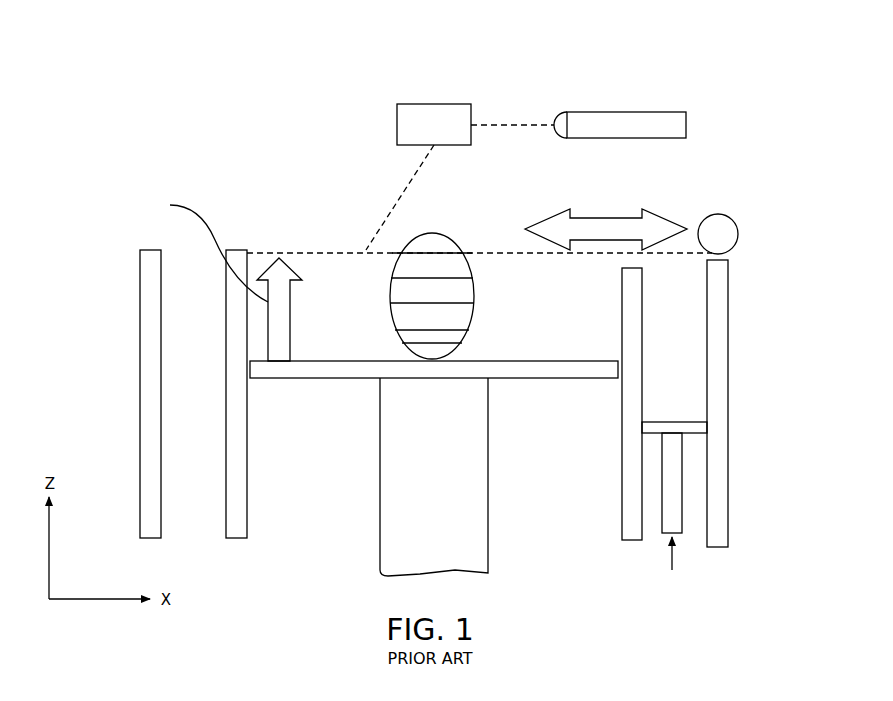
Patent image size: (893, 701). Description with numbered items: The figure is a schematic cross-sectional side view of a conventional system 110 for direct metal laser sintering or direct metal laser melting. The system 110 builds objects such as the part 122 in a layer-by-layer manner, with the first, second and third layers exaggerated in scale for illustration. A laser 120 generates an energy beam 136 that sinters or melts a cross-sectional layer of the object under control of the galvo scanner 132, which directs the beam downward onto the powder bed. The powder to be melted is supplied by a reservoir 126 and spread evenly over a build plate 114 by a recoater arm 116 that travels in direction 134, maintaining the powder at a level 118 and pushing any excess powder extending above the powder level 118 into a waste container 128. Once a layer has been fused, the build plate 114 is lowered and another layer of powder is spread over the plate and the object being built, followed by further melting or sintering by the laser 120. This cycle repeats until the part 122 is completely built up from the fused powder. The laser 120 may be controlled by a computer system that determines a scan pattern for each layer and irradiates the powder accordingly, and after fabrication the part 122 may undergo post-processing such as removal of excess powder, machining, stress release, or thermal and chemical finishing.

The system 110 is at (265, 98).
The build plate 114 is at (571, 360).
The recoater arm 116 is at (718, 214).
The powder level 118 is at (290, 250).
The laser 120 is at (612, 112).
The part 122 is at (389, 300).
The reservoir 126 is at (692, 316).
The waste container 128 is at (207, 477).
The galvo scanner 132 is at (438, 101).
The direction 134 is at (552, 213).
The energy beam 136 is at (405, 185).